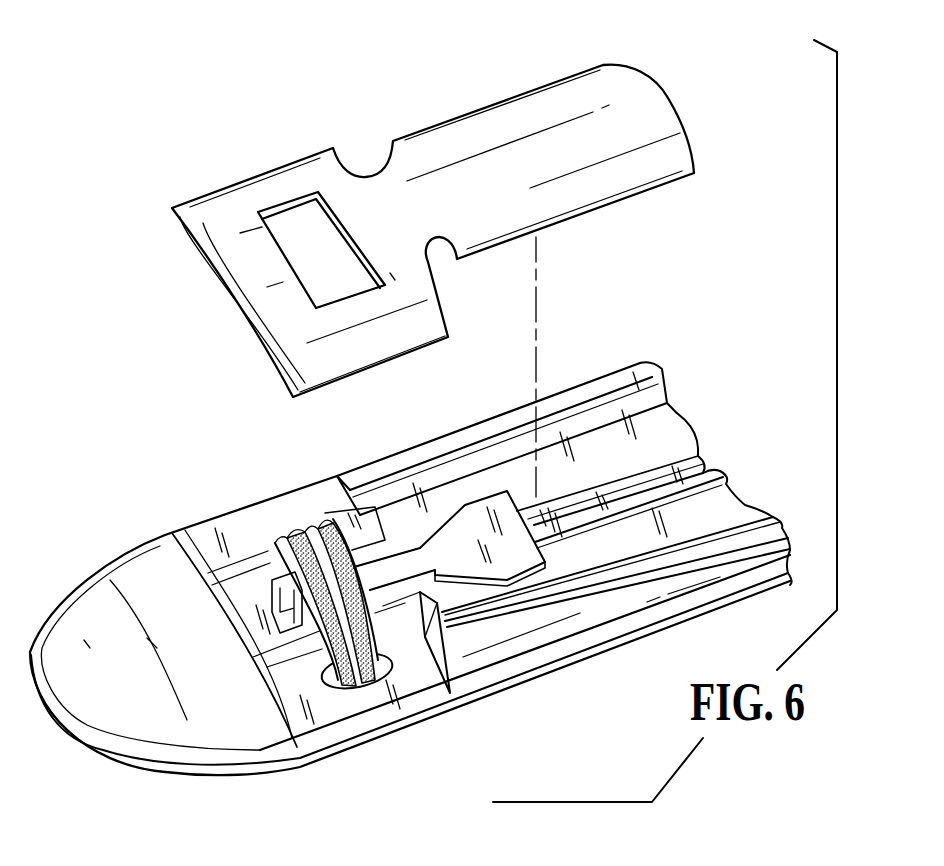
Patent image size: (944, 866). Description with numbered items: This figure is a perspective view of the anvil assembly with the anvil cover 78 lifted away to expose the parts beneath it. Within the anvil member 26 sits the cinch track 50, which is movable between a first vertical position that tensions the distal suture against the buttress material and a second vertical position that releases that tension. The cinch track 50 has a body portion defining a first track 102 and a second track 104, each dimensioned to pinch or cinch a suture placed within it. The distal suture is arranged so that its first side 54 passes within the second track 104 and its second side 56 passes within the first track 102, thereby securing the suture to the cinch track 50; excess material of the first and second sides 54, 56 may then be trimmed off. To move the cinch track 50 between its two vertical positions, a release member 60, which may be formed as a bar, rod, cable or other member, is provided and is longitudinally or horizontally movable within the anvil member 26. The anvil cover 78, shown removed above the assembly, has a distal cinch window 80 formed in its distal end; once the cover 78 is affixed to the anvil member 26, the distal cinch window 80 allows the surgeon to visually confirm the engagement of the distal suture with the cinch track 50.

The anvil member 26 is at (127, 343).
The cinch track 50 is at (340, 512).
The first side 54 is at (280, 542).
The second side 56 is at (313, 520).
The release member 60 is at (520, 551).
The anvil cover 78 is at (505, 98).
The distal cinch window 80 is at (286, 250).
The first track 102 is at (420, 592).
The second track 104 is at (314, 635).